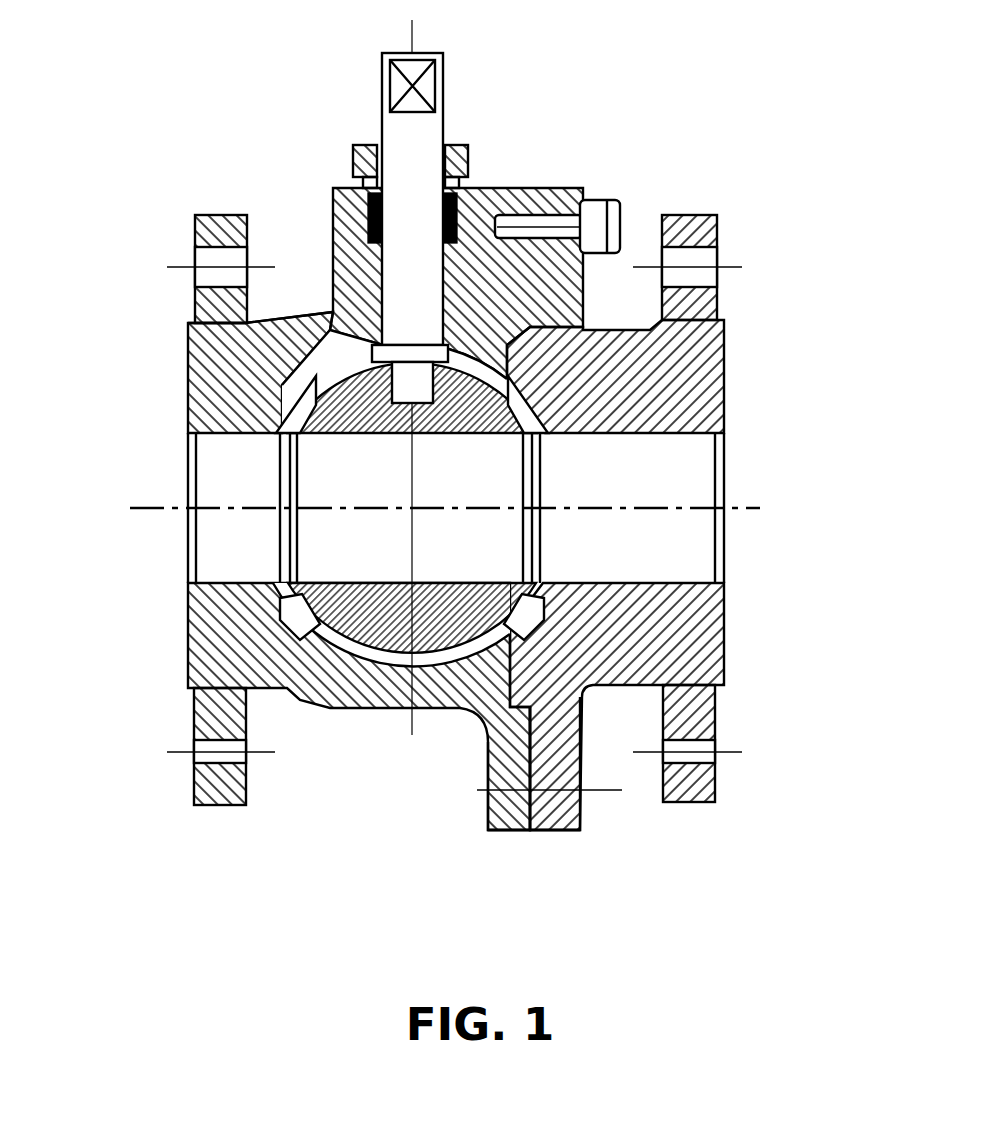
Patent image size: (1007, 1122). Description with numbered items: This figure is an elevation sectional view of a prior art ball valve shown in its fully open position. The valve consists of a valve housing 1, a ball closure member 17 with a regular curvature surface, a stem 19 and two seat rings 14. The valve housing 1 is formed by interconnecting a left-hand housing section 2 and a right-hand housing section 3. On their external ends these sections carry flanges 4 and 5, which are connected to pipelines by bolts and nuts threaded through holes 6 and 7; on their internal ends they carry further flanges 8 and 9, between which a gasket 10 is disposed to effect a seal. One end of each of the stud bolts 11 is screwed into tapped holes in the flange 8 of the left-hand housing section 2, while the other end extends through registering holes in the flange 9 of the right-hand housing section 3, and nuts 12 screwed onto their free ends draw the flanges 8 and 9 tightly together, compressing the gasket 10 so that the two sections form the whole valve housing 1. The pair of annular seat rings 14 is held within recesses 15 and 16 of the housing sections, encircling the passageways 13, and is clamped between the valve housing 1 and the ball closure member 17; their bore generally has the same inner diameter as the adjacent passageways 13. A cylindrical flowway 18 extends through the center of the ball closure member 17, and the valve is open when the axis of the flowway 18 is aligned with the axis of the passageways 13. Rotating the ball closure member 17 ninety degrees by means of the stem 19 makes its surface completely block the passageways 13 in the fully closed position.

The valve housing 1 is at (499, 178).
The left-hand housing section 2 is at (188, 610).
The right-hand housing section 3 is at (695, 600).
The flange 4 is at (195, 792).
The flange 5 is at (708, 720).
The holes 6 is at (215, 268).
The holes 7 is at (717, 250).
The flange 8 is at (510, 830).
The flange 9 is at (573, 830).
The gasket 10 is at (486, 742).
The stud bolts 11 is at (565, 220).
The nuts 12 is at (587, 203).
The passageways 13 is at (237, 467).
The seat rings 14 is at (548, 392).
The recess 15 is at (317, 627).
The recess 16 is at (510, 603).
The ball closure member 17 is at (190, 316).
The flowway 18 is at (478, 493).
The stem 19 is at (413, 158).